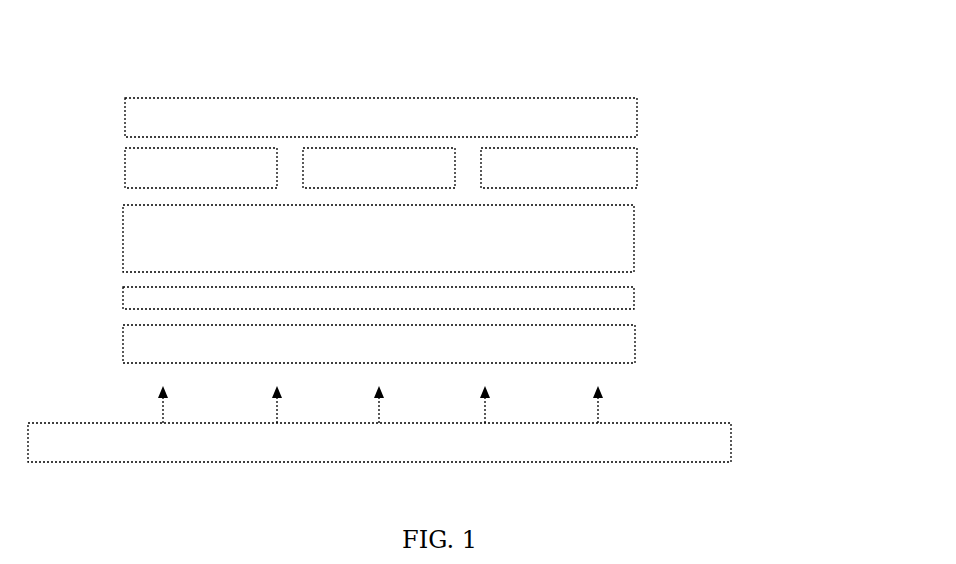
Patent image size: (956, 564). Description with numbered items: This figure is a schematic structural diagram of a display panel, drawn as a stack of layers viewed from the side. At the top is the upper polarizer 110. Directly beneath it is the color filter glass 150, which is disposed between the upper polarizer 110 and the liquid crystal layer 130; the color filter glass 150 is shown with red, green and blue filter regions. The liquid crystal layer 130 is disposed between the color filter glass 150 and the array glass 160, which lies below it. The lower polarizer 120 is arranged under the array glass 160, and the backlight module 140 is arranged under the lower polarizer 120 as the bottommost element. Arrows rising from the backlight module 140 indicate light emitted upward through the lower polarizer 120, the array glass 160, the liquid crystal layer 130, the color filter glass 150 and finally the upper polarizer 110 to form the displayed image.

The upper polarizer 110 is at (516, 98).
The color filter glass 150 is at (637, 169).
The liquid crystal layer 130 is at (634, 254).
The array glass 160 is at (634, 299).
The lower polarizer 120 is at (635, 343).
The backlight module 140 is at (731, 443).